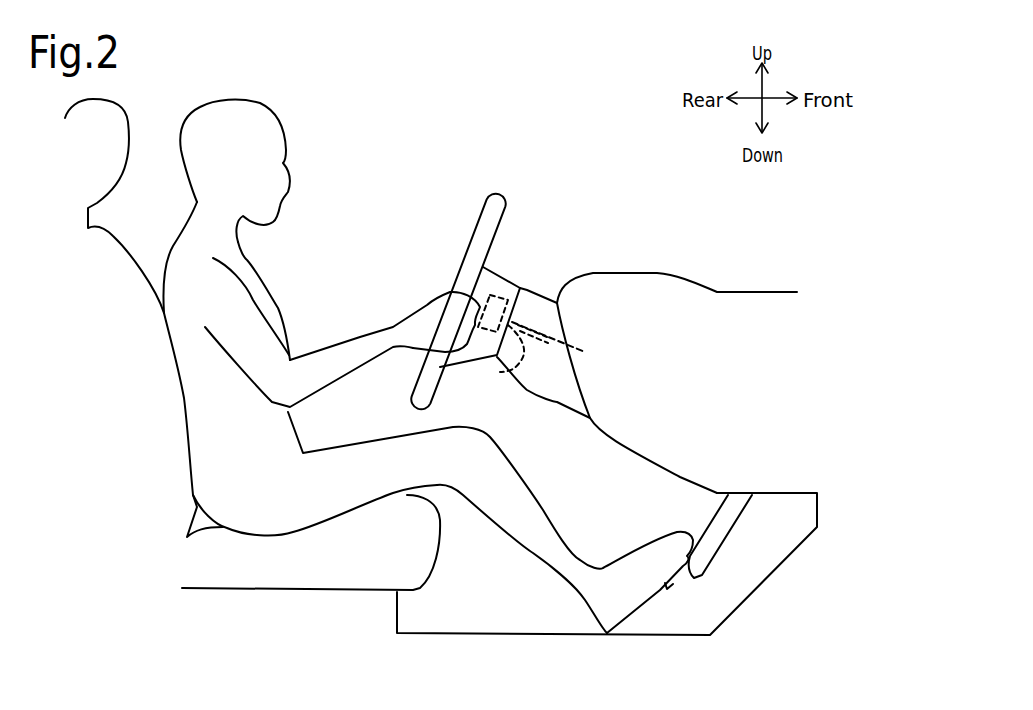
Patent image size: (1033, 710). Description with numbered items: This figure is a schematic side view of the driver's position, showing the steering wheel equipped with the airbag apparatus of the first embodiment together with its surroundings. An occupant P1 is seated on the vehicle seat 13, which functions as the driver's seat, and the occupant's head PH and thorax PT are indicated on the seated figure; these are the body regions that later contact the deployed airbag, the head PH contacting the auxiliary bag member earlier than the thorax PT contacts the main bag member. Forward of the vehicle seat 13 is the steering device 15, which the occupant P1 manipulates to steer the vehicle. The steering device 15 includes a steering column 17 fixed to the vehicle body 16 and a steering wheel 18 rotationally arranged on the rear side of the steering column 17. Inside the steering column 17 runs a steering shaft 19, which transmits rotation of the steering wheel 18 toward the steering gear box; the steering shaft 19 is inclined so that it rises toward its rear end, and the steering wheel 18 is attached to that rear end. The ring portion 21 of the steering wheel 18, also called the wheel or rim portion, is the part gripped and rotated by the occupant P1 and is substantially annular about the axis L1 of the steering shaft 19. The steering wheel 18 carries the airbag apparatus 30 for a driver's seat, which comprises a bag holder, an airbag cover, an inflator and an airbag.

The vehicle seat 13 is at (132, 255).
The head PH is at (200, 107).
The occupant P1 is at (416, 364).
The thorax PT is at (263, 277).
The ring portion 21 is at (503, 200).
The steering wheel 18 is at (514, 296).
The airbag apparatus for a driver's seat 30 is at (500, 289).
The steering device 15 is at (552, 281).
The vehicle body 16 is at (778, 291).
The steering column 17 is at (552, 405).
The steering shaft 19 is at (510, 358).
The axis L1 is at (585, 352).